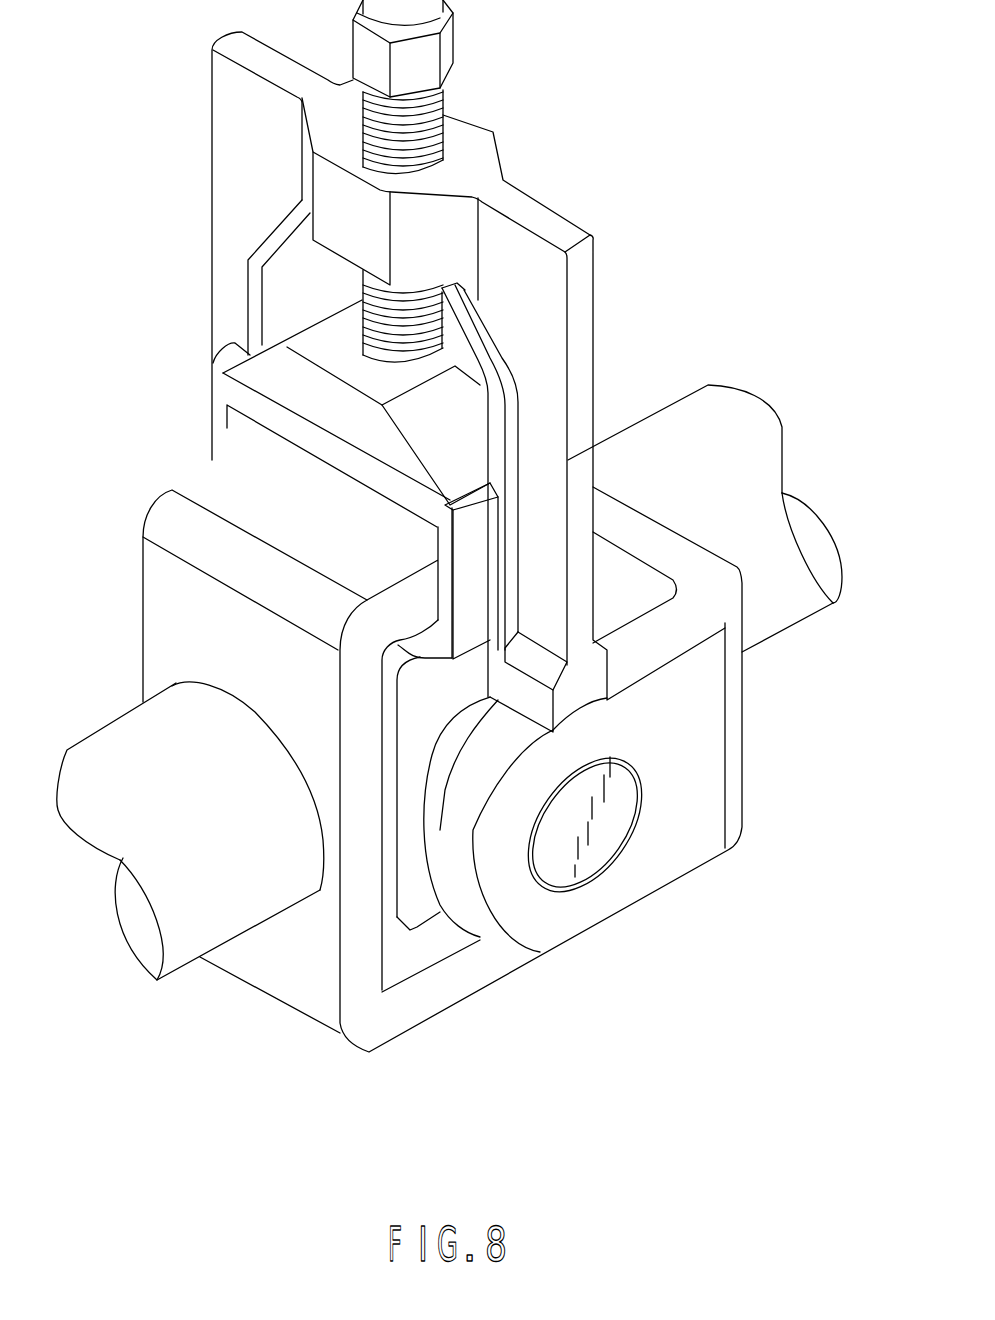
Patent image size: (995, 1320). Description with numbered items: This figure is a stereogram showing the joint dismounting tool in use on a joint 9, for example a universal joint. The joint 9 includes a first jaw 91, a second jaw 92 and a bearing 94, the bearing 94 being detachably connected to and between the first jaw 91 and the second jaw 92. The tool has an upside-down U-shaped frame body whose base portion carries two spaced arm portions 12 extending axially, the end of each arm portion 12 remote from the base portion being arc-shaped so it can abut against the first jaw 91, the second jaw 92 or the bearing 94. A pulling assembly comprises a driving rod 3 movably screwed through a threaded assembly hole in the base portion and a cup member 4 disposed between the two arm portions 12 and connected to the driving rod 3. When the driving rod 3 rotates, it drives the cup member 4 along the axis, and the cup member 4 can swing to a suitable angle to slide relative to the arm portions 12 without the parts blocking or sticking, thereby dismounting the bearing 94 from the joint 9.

The driving rod 3 is at (430, 115).
The cup member 4 is at (467, 431).
The arm portion 12 is at (592, 453).
The joint 9 is at (753, 700).
The first jaw 91 is at (227, 560).
The second jaw 92 is at (628, 885).
The bearing 94 is at (415, 903).